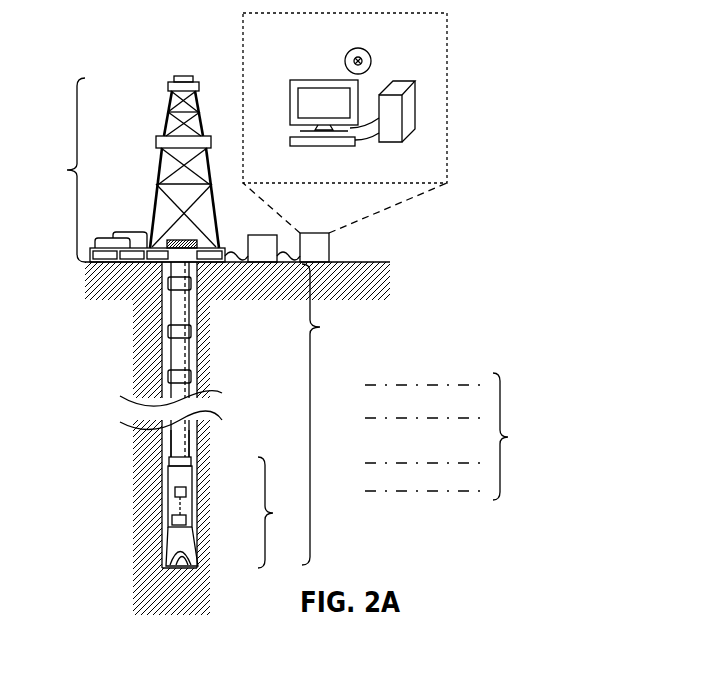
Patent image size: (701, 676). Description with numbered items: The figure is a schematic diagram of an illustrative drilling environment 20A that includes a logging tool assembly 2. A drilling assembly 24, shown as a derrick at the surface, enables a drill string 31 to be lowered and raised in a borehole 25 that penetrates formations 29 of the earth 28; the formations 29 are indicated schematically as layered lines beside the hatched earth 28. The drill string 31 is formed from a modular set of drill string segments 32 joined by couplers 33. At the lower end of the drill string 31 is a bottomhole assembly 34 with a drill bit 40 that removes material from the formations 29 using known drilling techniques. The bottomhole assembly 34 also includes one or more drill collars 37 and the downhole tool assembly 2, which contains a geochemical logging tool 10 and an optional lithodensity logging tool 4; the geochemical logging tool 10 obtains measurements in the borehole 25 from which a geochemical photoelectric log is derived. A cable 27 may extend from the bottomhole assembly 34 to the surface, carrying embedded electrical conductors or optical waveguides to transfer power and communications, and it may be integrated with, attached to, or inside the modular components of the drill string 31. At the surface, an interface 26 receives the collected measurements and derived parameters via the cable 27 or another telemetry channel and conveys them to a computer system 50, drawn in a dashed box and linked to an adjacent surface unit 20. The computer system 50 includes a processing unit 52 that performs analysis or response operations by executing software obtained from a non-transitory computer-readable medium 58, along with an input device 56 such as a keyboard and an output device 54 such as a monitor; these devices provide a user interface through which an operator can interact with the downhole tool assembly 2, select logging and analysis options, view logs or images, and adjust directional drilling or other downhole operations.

The drilling environment 20A is at (118, 62).
The drilling assembly 24 is at (129, 169).
The computer system 50 is at (450, 103).
The processing unit 52 is at (405, 79).
The output device 54 is at (290, 103).
The input device 56 is at (340, 145).
The non-transitory computer-readable medium 58 is at (353, 50).
The interface 26 is at (260, 234).
The surface control unit 20 is at (329, 246).
The earth 28 is at (143, 295).
The borehole 25 is at (203, 310).
The drill string 31 is at (327, 414).
The drill string segment 32 is at (190, 355).
The coupler 33 is at (167, 337).
The cable 27 is at (189, 442).
The bottomhole assembly 34 is at (280, 512).
The drill collar 37 is at (191, 464).
The downhole tool assembly 2 is at (193, 502).
The lithodensity logging tool 4 is at (175, 492).
The geochemical logging tool 10 is at (172, 520).
The drill bit 40 is at (198, 548).
The formations 29 is at (459, 436).